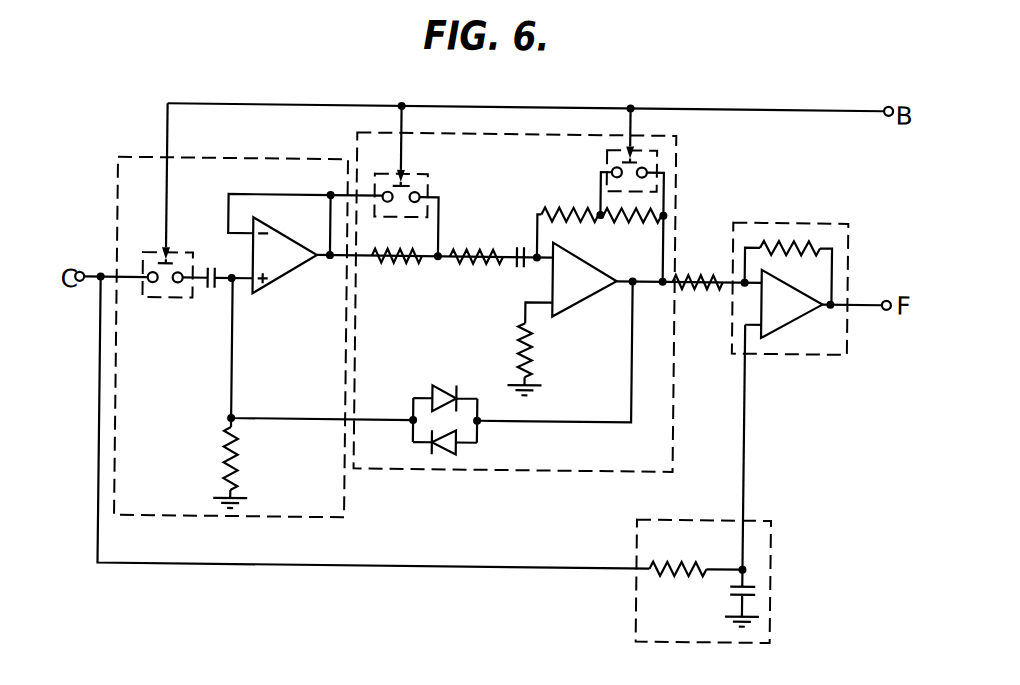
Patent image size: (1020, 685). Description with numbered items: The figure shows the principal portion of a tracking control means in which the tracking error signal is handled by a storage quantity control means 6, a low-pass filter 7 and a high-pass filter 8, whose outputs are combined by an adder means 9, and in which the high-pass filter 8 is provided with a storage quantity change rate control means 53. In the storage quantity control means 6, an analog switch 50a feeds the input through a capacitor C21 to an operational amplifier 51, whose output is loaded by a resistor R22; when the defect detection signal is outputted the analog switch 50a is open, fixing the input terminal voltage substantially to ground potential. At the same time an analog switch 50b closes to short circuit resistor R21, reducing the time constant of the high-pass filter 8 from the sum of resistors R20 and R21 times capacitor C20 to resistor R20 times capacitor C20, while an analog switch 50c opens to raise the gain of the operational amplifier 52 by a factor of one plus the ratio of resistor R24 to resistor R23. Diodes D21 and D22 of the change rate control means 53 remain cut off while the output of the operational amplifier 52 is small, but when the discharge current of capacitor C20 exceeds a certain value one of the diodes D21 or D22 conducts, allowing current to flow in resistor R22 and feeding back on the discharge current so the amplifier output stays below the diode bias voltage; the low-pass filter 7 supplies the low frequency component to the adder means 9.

The storage quantity control means 6 is at (132, 161).
The low-pass filter 7 is at (774, 554).
The high-pass filter 8 is at (543, 130).
The adder means 9 is at (836, 218).
The analog switch 50a is at (148, 304).
The analog switch 50b is at (426, 181).
The analog switch 50c is at (660, 160).
The operational amplifier 51 is at (277, 282).
The operational amplifier 52 is at (577, 299).
The storage quantity change rate control means 53 is at (456, 412).
The capacitor C20 is at (519, 245).
The capacitor C21 is at (211, 265).
The diode D21 is at (433, 389).
The diode D22 is at (461, 455).
The resistor R20 is at (481, 267).
The resistor R21 is at (411, 268).
The resistor R22 is at (241, 461).
The resistor R23 is at (569, 206).
The resistor R24 is at (639, 215).